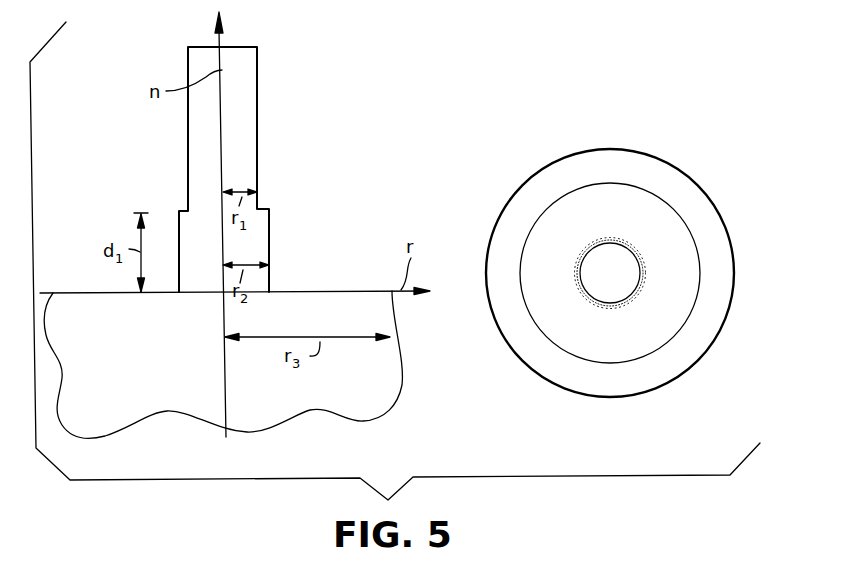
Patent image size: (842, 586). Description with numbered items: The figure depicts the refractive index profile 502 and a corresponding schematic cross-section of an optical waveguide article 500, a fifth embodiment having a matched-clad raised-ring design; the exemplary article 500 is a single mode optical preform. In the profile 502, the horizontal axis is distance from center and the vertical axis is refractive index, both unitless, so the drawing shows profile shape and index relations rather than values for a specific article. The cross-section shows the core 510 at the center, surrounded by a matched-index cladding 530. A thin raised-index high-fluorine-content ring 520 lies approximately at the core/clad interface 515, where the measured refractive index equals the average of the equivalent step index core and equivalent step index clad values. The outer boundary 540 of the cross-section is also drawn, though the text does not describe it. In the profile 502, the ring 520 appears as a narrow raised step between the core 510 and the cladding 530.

The optical waveguide article 500 is at (598, 303).
The refractive index profile 502 is at (313, 180).
The core 510 is at (598, 278).
The core/clad interface 515 is at (607, 305).
The raised-index high-fluorine-content ring 520 is at (625, 307).
The matched-index cladding 530 is at (643, 342).
The fiber outer surface 540 is at (692, 357).